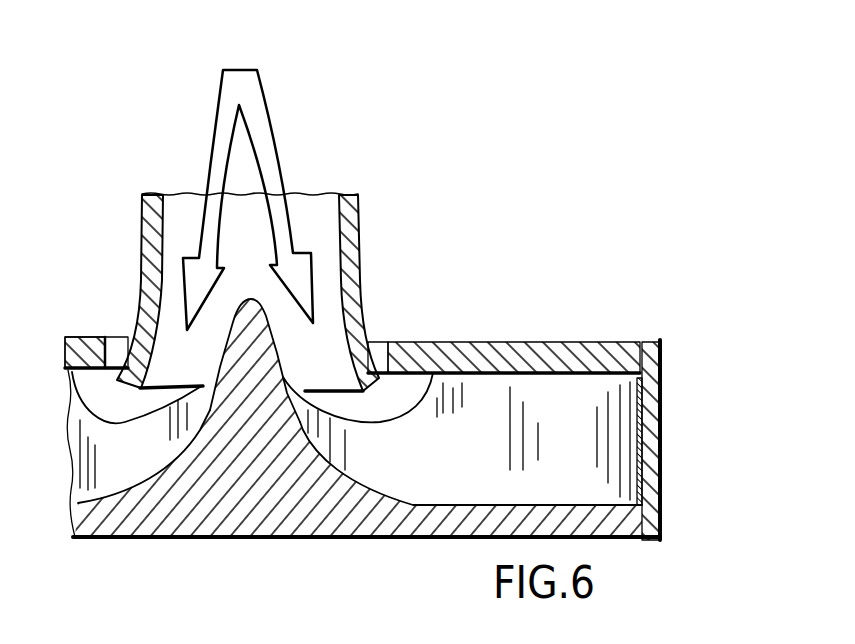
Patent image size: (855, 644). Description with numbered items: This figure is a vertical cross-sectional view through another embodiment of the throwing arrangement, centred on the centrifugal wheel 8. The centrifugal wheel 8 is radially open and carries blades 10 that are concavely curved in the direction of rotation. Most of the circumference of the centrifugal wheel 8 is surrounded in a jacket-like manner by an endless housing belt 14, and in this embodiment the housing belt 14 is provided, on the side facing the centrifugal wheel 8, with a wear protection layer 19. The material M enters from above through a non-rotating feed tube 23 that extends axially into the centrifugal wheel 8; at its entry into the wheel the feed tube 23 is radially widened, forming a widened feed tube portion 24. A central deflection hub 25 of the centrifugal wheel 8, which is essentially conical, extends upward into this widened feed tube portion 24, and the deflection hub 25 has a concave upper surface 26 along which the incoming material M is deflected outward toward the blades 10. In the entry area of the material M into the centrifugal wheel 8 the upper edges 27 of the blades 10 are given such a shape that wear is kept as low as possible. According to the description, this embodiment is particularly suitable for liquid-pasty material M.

The material M is at (263, 135).
The centrifugal wheel 8 is at (577, 344).
The blades 10 is at (483, 392).
The housing belt 14 is at (660, 438).
The wear protection layer 19 is at (640, 432).
The feed tube 23 is at (362, 227).
The widened feed tube portion 24 is at (377, 340).
The deflection hub 25 is at (233, 358).
The concave upper surface 26 is at (317, 452).
The upper edges 27 is at (383, 409).